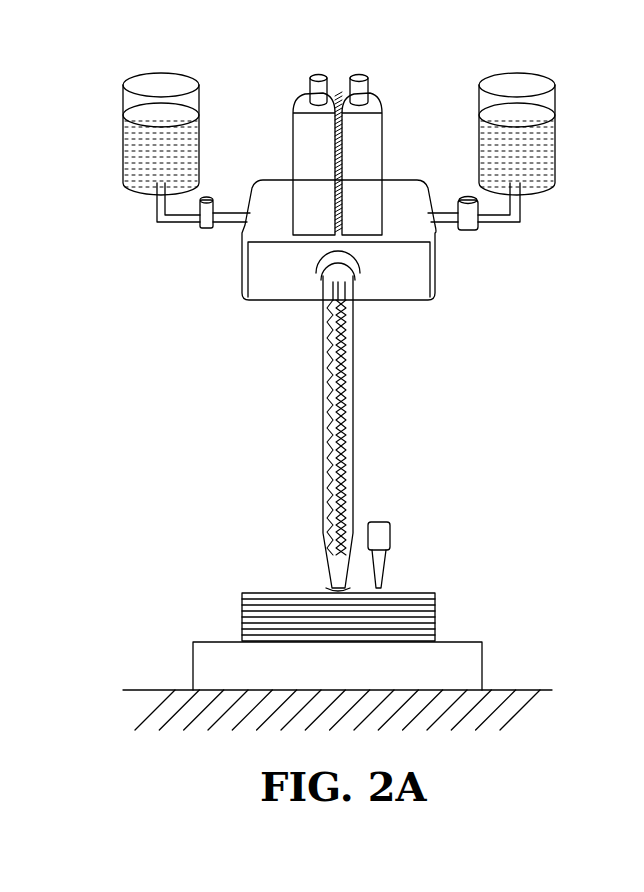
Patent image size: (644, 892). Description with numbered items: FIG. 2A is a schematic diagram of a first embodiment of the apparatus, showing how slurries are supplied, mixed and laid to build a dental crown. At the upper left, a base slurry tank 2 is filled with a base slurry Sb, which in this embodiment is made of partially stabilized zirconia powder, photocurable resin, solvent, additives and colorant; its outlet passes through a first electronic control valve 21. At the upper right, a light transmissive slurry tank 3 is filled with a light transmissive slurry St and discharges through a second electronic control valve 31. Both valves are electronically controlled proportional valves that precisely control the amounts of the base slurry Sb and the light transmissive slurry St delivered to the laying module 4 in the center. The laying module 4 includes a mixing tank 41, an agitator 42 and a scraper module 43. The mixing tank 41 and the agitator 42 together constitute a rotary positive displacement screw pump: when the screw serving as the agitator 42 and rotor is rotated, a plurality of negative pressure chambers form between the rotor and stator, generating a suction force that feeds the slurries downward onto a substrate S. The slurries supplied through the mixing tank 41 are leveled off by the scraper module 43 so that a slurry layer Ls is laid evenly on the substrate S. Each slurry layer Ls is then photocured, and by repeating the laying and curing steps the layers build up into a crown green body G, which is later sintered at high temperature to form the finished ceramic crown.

The base slurry tank 2 is at (122, 140).
The base slurry Sb is at (138, 190).
The first electronic control valve 21 is at (206, 232).
The light transmissive slurry tank 3 is at (556, 138).
The light transmissive slurry St is at (537, 190).
The second electronic control valve 31 is at (470, 232).
The laying module 4 is at (352, 432).
The mixing tank 41 is at (354, 362).
The agitator 42 is at (336, 430).
The scraper module 43 is at (388, 535).
The crown green body G is at (318, 588).
The slurry layer Ls is at (427, 592).
The substrate S is at (476, 662).